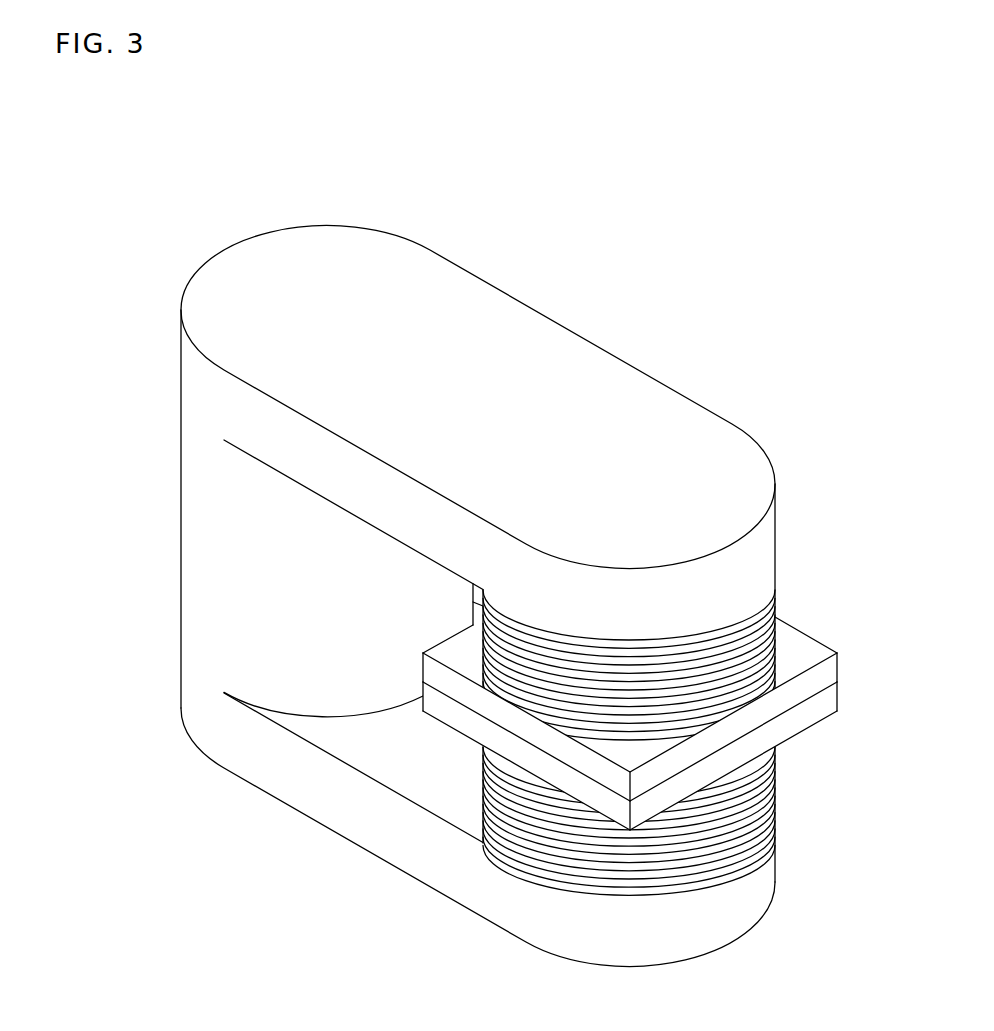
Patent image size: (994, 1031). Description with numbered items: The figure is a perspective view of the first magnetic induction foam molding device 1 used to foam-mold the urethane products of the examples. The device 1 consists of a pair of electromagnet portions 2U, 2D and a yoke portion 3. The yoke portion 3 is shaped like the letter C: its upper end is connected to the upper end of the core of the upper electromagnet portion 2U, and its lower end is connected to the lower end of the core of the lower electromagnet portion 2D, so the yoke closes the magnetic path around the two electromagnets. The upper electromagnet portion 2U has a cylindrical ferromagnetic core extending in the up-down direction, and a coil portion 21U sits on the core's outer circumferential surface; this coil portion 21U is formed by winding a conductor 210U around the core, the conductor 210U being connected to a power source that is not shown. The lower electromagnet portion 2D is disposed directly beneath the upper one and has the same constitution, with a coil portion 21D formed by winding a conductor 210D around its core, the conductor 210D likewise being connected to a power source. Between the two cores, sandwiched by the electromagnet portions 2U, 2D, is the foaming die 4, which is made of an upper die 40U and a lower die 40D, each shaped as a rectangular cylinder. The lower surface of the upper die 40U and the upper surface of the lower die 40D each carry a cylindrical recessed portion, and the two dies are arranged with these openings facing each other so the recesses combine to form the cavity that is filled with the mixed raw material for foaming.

The first magnetic induction foam molding device 1 is at (540, 548).
The yoke portion 3 is at (265, 205).
The electromagnet portion 2U is at (684, 626).
The coil portion 21U is at (775, 634).
The conductor 210U is at (775, 588).
The electromagnet portion 2D is at (691, 807).
The coil portion 21D is at (775, 780).
The conductor 210D is at (775, 812).
The foaming die 4 is at (592, 702).
The upper die 40U is at (439, 650).
The lower die 40D is at (438, 707).